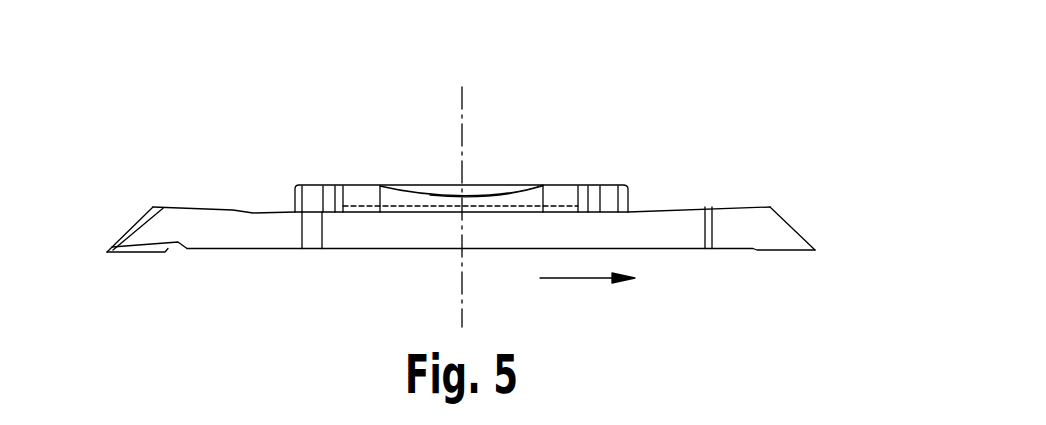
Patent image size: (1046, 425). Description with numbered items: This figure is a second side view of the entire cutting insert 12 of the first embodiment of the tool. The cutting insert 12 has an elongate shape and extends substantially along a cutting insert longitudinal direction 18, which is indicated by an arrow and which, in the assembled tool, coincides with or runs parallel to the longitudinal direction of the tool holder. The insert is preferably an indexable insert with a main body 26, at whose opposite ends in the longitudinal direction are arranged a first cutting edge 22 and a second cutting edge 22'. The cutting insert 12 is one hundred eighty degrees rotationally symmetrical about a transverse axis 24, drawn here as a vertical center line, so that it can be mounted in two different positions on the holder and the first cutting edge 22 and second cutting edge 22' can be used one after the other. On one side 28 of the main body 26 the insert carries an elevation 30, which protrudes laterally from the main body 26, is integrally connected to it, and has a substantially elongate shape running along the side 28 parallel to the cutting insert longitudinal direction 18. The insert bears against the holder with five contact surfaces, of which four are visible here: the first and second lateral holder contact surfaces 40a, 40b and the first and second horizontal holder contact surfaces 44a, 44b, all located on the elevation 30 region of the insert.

The cutting insert 12 is at (766, 124).
The cutting insert longitudinal direction 18 is at (582, 280).
The first cutting edge 22 is at (110, 221).
The second cutting edge 22' is at (833, 218).
The transverse axis 24 is at (462, 112).
The main body 26 is at (672, 230).
The side of the main body 28 is at (253, 213).
The elevation 30 is at (627, 194).
The first lateral holder contact surface 40a is at (368, 187).
The second lateral holder contact surface 40b is at (613, 187).
The first horizontal holder contact surface 44a is at (345, 198).
The second horizontal holder contact surface 44b is at (587, 198).